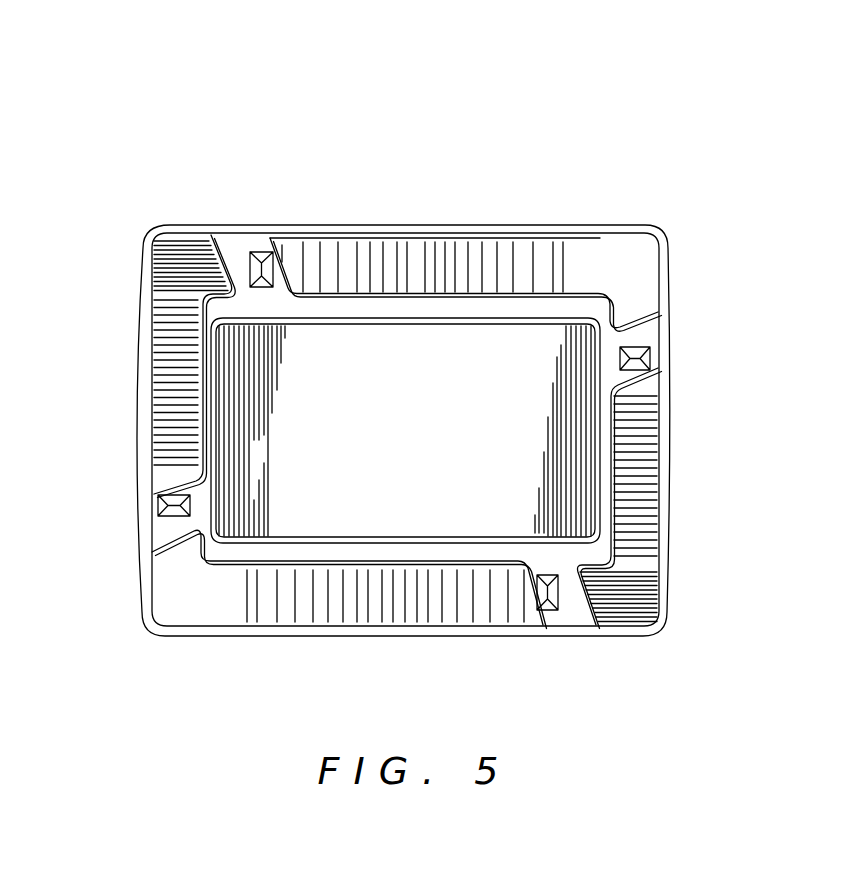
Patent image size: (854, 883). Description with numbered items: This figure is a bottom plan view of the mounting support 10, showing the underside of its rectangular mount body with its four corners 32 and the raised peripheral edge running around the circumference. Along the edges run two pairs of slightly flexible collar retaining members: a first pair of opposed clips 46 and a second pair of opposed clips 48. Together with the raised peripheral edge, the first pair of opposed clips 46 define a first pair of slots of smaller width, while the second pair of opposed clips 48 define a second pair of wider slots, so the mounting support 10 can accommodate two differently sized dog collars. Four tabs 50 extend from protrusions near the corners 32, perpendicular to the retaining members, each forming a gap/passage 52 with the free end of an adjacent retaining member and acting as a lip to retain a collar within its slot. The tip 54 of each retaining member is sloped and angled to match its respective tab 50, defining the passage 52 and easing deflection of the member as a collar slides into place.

The mounting support 10 is at (216, 117).
The corner 32 is at (168, 258).
The first pair of opposed clips 46 is at (158, 373).
The second pair of opposed clips 48 is at (398, 250).
The tab 50 is at (214, 268).
The gap/passage 52 is at (233, 253).
The tip 54 is at (271, 238).